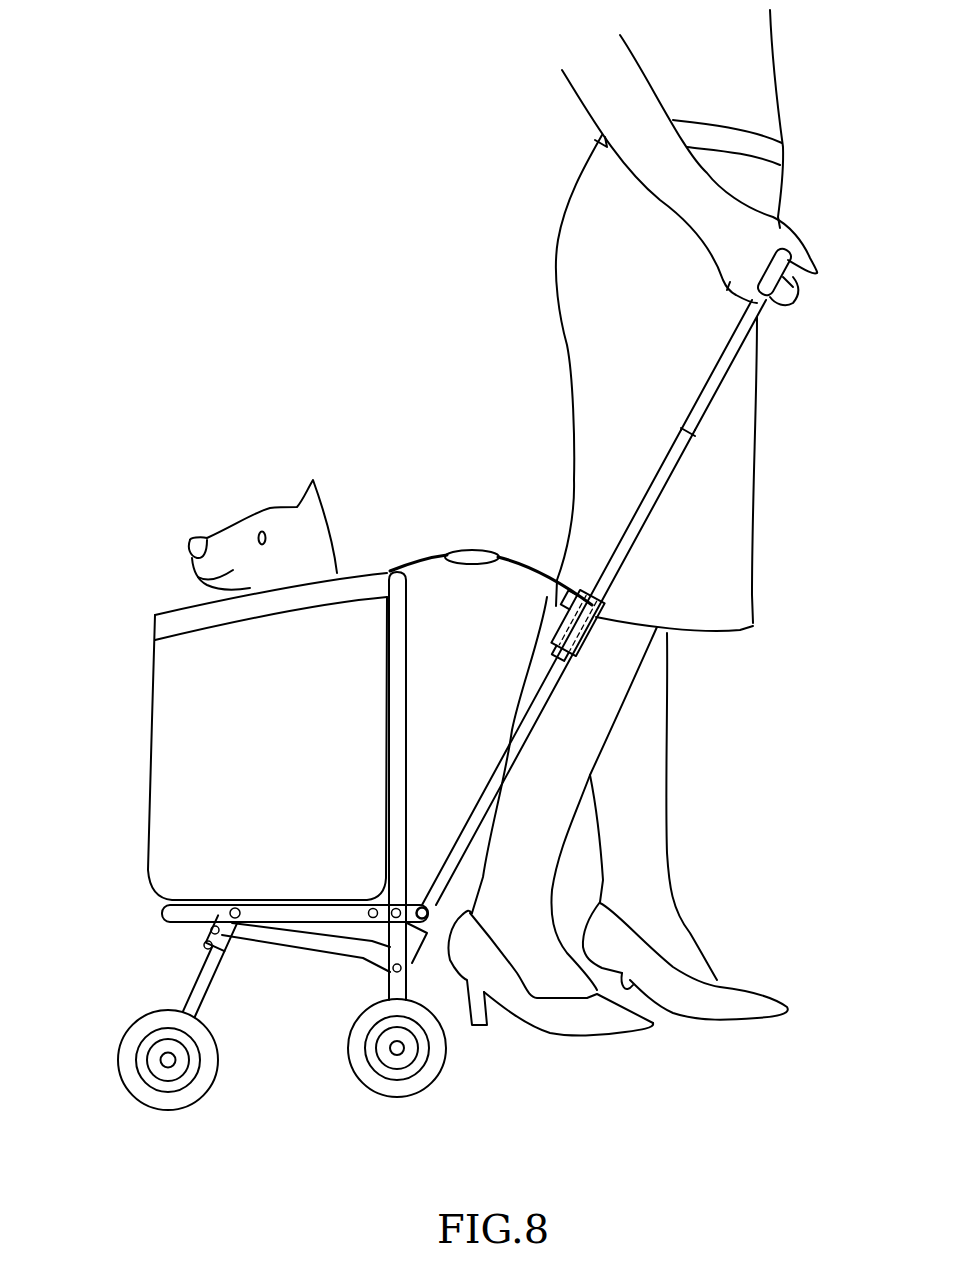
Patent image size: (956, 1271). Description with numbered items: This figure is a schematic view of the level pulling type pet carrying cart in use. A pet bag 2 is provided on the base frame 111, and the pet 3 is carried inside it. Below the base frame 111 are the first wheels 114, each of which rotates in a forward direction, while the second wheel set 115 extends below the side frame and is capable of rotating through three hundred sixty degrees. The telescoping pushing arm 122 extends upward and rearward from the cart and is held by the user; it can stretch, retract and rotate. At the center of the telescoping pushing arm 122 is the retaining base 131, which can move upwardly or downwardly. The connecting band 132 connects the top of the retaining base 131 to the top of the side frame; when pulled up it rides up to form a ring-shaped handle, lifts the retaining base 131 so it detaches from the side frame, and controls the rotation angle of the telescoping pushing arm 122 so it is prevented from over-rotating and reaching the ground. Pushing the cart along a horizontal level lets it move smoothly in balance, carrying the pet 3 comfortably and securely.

The pet bag 2 is at (173, 720).
The pet 3 is at (285, 523).
The base frame 111 is at (167, 913).
The first wheel 114 is at (140, 1018).
The second wheel set 115 is at (360, 1017).
The telescoping pushing arm 122 is at (653, 490).
The retaining base 131 is at (553, 595).
The connecting band 132 is at (475, 558).